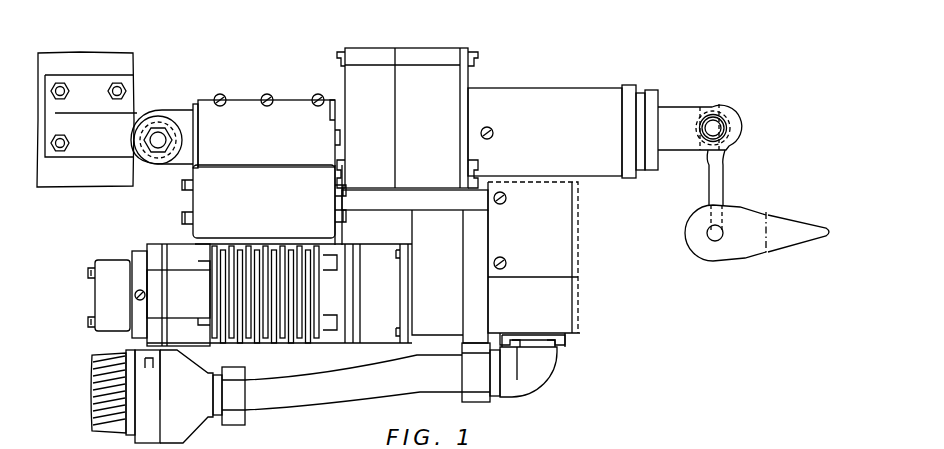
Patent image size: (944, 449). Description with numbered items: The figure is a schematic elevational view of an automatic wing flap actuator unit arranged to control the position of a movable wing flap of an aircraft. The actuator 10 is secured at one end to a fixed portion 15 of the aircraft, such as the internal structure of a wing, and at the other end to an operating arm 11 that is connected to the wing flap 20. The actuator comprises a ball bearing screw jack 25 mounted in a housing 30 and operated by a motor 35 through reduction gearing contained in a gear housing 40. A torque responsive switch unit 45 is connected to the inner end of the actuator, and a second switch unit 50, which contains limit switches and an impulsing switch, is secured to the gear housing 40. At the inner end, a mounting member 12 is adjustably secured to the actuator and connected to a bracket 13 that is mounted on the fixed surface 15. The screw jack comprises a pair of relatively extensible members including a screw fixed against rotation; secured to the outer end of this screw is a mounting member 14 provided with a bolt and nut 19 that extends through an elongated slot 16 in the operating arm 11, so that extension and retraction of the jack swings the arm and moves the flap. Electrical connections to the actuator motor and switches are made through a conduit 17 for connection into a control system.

The actuator 10 is at (497, 72).
The operating arm 11 is at (718, 173).
The mounting member 12 is at (183, 125).
The bracket 13 is at (90, 155).
The mounting member 14 is at (682, 113).
The fixed portion 15 is at (133, 62).
The elongated slot 16 is at (707, 155).
The conduit 17 is at (322, 403).
The bolt and nut 19 is at (719, 125).
The wing flap 20 is at (753, 217).
The ball bearing screw jack 25 is at (664, 76).
The housing 30 is at (446, 41).
The motor 35 is at (302, 346).
The gear housing 40 is at (449, 330).
The torque responsive switch unit 45 is at (205, 205).
The second switch unit 50 is at (568, 302).